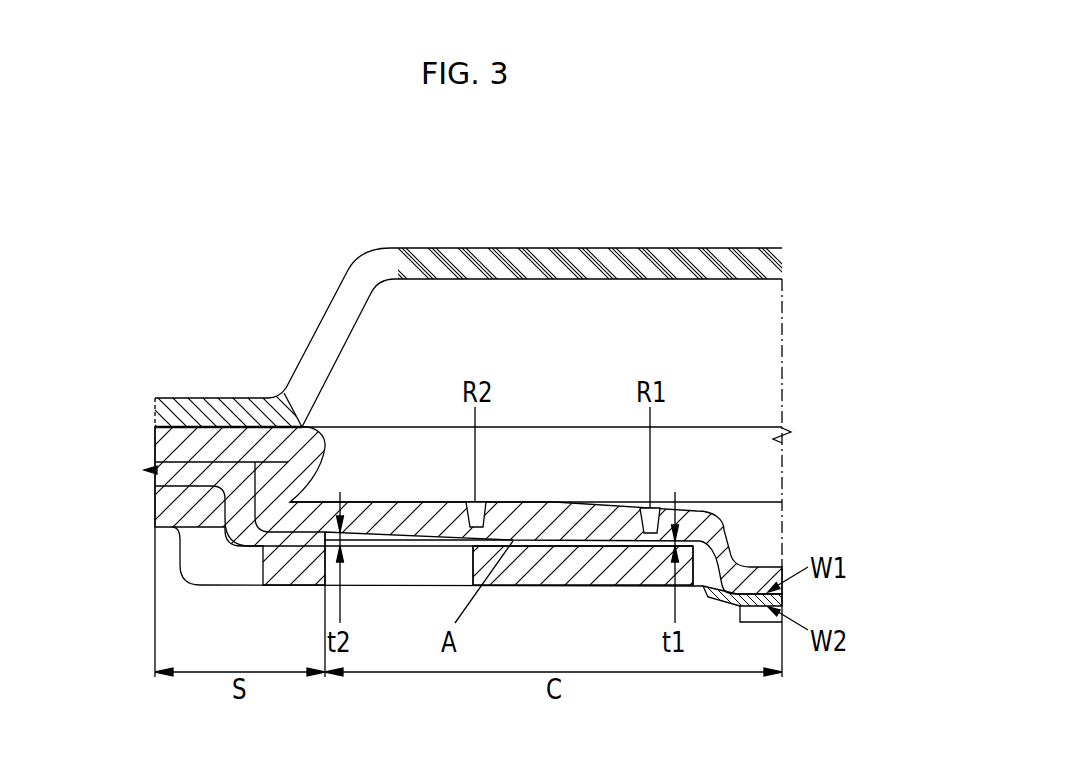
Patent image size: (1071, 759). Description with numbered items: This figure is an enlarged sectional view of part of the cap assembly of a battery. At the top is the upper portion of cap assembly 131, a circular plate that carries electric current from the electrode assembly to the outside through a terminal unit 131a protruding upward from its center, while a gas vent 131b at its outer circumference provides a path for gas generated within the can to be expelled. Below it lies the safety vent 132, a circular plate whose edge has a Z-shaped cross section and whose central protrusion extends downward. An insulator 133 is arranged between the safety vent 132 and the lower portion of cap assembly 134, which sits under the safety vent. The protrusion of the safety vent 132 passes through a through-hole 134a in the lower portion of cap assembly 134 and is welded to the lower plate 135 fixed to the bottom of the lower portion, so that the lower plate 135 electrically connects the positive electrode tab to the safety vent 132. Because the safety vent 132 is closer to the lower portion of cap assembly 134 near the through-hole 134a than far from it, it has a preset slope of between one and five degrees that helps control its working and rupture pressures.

The upper portion of cap assembly 131 is at (468, 276).
The terminal unit 131a is at (584, 225).
The gas vent 131b is at (468, 299).
The safety vent 132 is at (204, 392).
The insulator 133 is at (368, 475).
The lower portion of cap assembly 134 is at (373, 552).
The through-hole 134a is at (606, 579).
The lower plate 135 is at (790, 604).